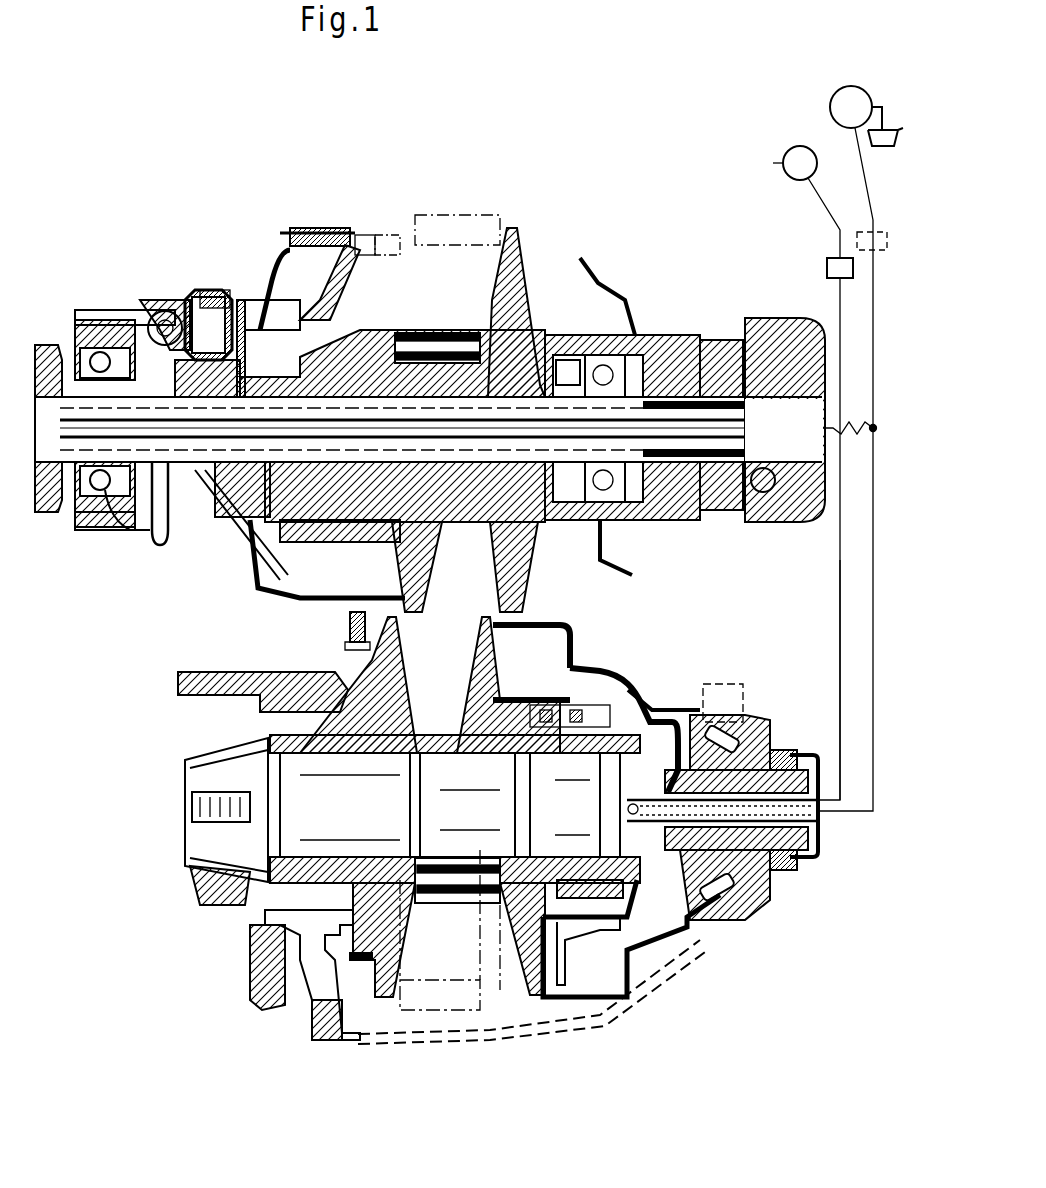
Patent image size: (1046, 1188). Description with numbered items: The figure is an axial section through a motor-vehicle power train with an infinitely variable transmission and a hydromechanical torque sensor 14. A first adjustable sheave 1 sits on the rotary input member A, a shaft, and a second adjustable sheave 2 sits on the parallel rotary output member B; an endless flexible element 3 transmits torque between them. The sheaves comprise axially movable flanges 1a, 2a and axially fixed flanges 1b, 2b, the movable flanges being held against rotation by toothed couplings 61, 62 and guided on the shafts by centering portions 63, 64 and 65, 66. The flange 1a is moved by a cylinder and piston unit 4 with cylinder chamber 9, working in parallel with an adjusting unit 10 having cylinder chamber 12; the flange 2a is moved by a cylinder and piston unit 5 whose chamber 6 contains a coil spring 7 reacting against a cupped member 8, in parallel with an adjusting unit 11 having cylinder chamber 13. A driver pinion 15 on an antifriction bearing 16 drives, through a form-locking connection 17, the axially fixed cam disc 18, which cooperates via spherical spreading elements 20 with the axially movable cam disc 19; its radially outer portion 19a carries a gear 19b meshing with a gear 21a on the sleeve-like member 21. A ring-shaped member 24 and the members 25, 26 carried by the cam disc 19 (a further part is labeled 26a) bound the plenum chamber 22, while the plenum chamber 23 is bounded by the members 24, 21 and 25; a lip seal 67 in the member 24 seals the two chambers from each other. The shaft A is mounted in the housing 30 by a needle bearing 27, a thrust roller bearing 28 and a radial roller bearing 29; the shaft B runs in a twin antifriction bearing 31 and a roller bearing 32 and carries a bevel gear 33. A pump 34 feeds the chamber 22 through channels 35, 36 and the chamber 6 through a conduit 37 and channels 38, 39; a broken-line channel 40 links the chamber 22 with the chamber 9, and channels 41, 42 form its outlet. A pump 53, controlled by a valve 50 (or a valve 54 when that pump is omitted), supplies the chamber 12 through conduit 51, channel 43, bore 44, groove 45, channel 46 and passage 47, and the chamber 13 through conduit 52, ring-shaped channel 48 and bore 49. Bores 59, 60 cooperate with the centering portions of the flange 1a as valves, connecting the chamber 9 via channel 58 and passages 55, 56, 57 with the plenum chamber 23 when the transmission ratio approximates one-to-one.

The first adjustable sheave 1 is at (445, 592).
The axially movable first flange 1a is at (360, 245).
The axially fixed second flange 1b is at (520, 250).
The second adjustable sheave 2 is at (455, 1015).
The axially movable first flange 2a is at (515, 960).
The axially fixed second flange 2b is at (390, 960).
The endless flexible element 3 is at (430, 893).
The cylinder and piston unit 4 is at (277, 607).
The cylinder and piston unit 5 is at (593, 658).
The chamber 6 is at (652, 710).
The coil spring 7 is at (638, 695).
The cupped member 8 is at (625, 940).
The cylinder chamber 9 is at (365, 570).
The adjusting unit 10 is at (290, 300).
The adjusting unit 11 is at (578, 612).
The cylinder chamber 12 is at (388, 232).
The cylinder chamber 13 is at (527, 640).
The torque sensor 14 is at (138, 575).
The driver pinion 15 is at (100, 318).
The antifriction bearing 16 is at (88, 345).
The form-locking connection 17 is at (122, 523).
The rotary cam disc 18 is at (160, 300).
The second cam disc 19 is at (185, 290).
The radially outer portion 19a is at (218, 290).
The gear 19b is at (233, 580).
The spherical spreading elements 20 is at (165, 310).
The sleeve-like member 21 is at (318, 240).
The complementary gear 21a is at (225, 300).
The plenum chamber 22 is at (198, 290).
The plenum chamber 23 is at (262, 300).
The ring-shaped member 24 is at (290, 300).
The ring-shaped member 25 is at (183, 300).
The member 26 is at (118, 310).
The housing flange 26a is at (135, 320).
The needle bearing 27 is at (40, 347).
The thrust roller bearing 28 is at (603, 352).
The radial roller bearing 29 is at (563, 365).
The housing 30 is at (600, 280).
The twin antifriction rolling bearing 31 is at (727, 893).
The antifriction roller bearing 32 is at (290, 887).
The bevel gear 33 is at (183, 833).
The pump 34 is at (841, 86).
The axially extending channel 35 is at (645, 395).
The radially extending channel 36 is at (167, 547).
The conduit 37 is at (861, 813).
The axially extending channel 38 is at (818, 818).
The radially extending channels 39 is at (672, 917).
The channel 40 is at (207, 350).
The channel 41 is at (92, 478).
The axially extending channel 42 is at (27, 480).
The axially parallel channel 43 is at (572, 445).
The radially extending bore 44 is at (325, 523).
The peripheral groove 45 is at (233, 607).
The channel 46 is at (335, 240).
The radially extending passage 47 is at (270, 300).
The ring-shaped channel 48 is at (777, 877).
The radially extending channel 49 is at (742, 703).
The valve 50 is at (830, 262).
The conduit 51 is at (813, 315).
The conduit 52 is at (838, 585).
The pump 53 is at (792, 146).
The valve 54 is at (855, 228).
The passage 55 is at (280, 595).
The passage 56 is at (198, 590).
The passage 57 is at (400, 335).
The channel 58 is at (520, 340).
The bore 59 is at (425, 335).
The bore 60 is at (465, 340).
The toothed coupling 61 is at (362, 503).
The toothed coupling 62 is at (510, 740).
The centering portion 63 is at (310, 493).
The centering portion 64 is at (455, 300).
The centering portion 65 is at (500, 757).
The centering portion 66 is at (690, 713).
The lip seal 67 is at (217, 590).
The rotary input member A is at (107, 517).
The rotary output member B is at (282, 772).